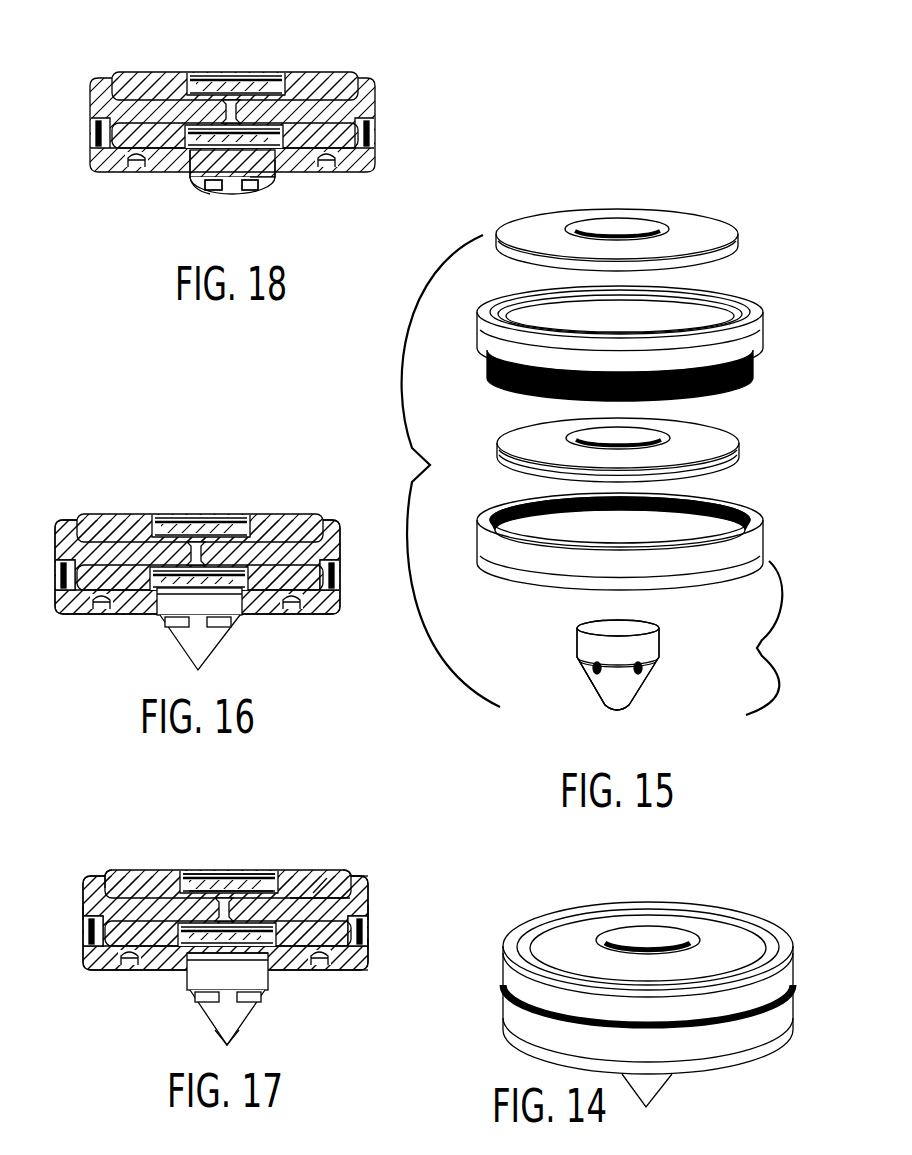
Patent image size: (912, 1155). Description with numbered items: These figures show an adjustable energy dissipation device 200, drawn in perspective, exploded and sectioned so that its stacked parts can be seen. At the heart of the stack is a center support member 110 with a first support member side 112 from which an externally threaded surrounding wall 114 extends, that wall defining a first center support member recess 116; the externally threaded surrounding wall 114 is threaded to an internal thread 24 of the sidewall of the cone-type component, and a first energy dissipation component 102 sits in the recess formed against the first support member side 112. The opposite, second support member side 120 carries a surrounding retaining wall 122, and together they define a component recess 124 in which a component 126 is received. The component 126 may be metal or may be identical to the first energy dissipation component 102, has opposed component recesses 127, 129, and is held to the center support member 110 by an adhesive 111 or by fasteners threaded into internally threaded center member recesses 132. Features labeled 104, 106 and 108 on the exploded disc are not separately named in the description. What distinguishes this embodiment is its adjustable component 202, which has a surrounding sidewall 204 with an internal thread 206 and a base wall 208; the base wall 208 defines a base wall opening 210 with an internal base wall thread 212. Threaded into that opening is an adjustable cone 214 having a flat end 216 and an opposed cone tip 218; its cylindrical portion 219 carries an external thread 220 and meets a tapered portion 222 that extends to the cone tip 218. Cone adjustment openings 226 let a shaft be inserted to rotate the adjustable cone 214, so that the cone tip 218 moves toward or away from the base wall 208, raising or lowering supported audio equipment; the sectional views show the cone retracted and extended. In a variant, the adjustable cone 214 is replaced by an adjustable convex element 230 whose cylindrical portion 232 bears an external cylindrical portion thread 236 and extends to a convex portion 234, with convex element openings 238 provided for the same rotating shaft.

In FIG. 17, the internal thread 24 is at (85, 913).
In FIG. 18, the first energy dissipation component 102 is at (373, 118).
In FIG. 16, the first energy dissipation component 102 is at (337, 577).
In FIG. 17, the first energy dissipation component 102 is at (368, 928).
In FIG. 15, the first energy dissipation component 102 is at (498, 438).
In FIG. 15, the disc side surface 104 is at (510, 473).
In FIG. 15, the disc central aperture 106 is at (673, 440).
In FIG. 15, the disc bottom edge 108 is at (730, 470).
In FIG. 18, the center support member 110 is at (375, 88).
In FIG. 16, the center support member 110 is at (62, 520).
In FIG. 17, the center support member 110 is at (92, 873).
In FIG. 15, the center support member 110 is at (480, 312).
In FIG. 17, the adhesive 111 is at (303, 893).
In FIG. 17, the first support member side 112 is at (320, 893).
In FIG. 17, the externally threaded surrounding wall 114 is at (368, 913).
In FIG. 15, the externally threaded surrounding wall 114 is at (485, 378).
In FIG. 17, the first center support member recess 116 is at (368, 967).
In FIG. 17, the second support member side 120 is at (110, 897).
In FIG. 15, the second support member side 120 is at (690, 330).
In FIG. 17, the surrounding retaining wall 122 is at (368, 878).
In FIG. 15, the surrounding retaining wall 122 is at (717, 292).
In FIG. 17, the component recess 124 is at (343, 870).
In FIG. 15, the component recess 124 is at (533, 308).
In FIG. 18, the component 126 is at (352, 70).
In FIG. 16, the component 126 is at (192, 515).
In FIG. 17, the component 126 is at (148, 872).
In FIG. 15, the component 126 is at (697, 212).
In FIG. 17, the component recess 127 is at (223, 870).
In FIG. 15, the component recess 127 is at (592, 223).
In FIG. 17, the component recess 129 is at (253, 897).
In FIG. 15, the internally threaded center member recesses 132 is at (507, 302).
In FIG. 16, the adjustable energy dissipation device 200 is at (327, 522).
In FIG. 17, the adjustable energy dissipation device 200 is at (360, 875).
In FIG. 15, the adjustable energy dissipation device 200 is at (427, 471).
In FIG. 14, the adjustable energy dissipation device 200 is at (792, 1012).
In FIG. 18, the adjustable component 202 is at (95, 122).
In FIG. 16, the adjustable component 202 is at (132, 615).
In FIG. 17, the adjustable component 202 is at (313, 970).
In FIG. 15, the adjustable component 202 is at (693, 638).
In FIG. 18, the surrounding sidewall 204 is at (373, 142).
In FIG. 16, the surrounding sidewall 204 is at (342, 597).
In FIG. 17, the surrounding sidewall 204 is at (85, 948).
In FIG. 15, the surrounding sidewall 204 is at (533, 583).
In FIG. 17, the internal thread 206 is at (368, 942).
In FIG. 15, the internal thread 206 is at (757, 523).
In FIG. 18, the base wall 208 is at (92, 168).
In FIG. 16, the base wall 208 is at (67, 615).
In FIG. 17, the base wall 208 is at (147, 970).
In FIG. 15, the base wall 208 is at (627, 525).
In FIG. 18, the base wall opening 210 is at (197, 187).
In FIG. 18, the internal base wall thread 212 is at (277, 173).
In FIG. 17, the internal base wall thread 212 is at (270, 973).
In FIG. 17, the adjustable cone 214 is at (202, 1018).
In FIG. 15, the adjustable cone 214 is at (632, 698).
In FIG. 14, the adjustable cone 214 is at (665, 1090).
In FIG. 15, the flat end 216 is at (660, 627).
In FIG. 17, the cone tip 218 is at (235, 1035).
In FIG. 15, the cone tip 218 is at (613, 712).
In FIG. 15, the cylindrical portion 219 is at (575, 650).
In FIG. 15, the external thread 220 is at (660, 650).
In FIG. 15, the tapered portion 222 is at (598, 687).
In FIG. 15, the cone adjustment openings 226 is at (647, 677).
In FIG. 18, the adjustable convex element 230 is at (248, 197).
In FIG. 18, the cylindrical portion 232 is at (185, 175).
In FIG. 18, the convex portion 234 is at (222, 197).
In FIG. 18, the external cylindrical portion thread 236 is at (277, 163).
In FIG. 18, the convex element openings 238 is at (250, 195).